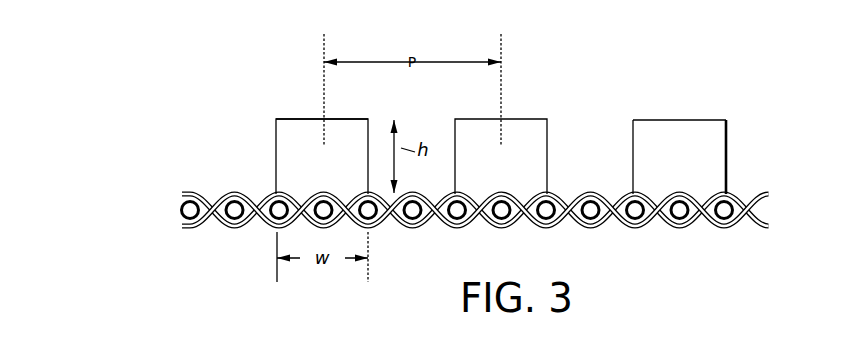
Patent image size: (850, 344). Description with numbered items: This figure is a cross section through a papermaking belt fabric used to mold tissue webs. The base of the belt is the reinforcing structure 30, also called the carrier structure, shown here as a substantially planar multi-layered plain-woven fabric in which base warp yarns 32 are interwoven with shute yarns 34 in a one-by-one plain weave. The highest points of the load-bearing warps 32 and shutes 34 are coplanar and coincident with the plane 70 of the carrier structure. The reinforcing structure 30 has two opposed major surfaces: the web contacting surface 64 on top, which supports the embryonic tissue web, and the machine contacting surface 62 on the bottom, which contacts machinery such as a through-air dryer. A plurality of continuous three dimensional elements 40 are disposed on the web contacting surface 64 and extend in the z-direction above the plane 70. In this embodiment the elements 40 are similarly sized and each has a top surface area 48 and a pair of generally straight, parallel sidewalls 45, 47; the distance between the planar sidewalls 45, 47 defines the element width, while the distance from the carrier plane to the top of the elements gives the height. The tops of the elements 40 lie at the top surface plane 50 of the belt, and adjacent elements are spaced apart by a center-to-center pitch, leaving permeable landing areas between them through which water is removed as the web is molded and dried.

The reinforcing structure 30 is at (501, 213).
The base warp yarns 32 is at (770, 212).
The shute yarns 34 is at (729, 192).
The continuous three dimensional element 40 is at (524, 134).
The sidewall 45 is at (727, 132).
The sidewall 47 is at (633, 140).
The top surface area 48 is at (312, 118).
The top surface plane 50 is at (228, 134).
The machine contacting surface 62 is at (249, 244).
The web contacting surface 64 is at (565, 66).
The plane 70 is at (184, 184).